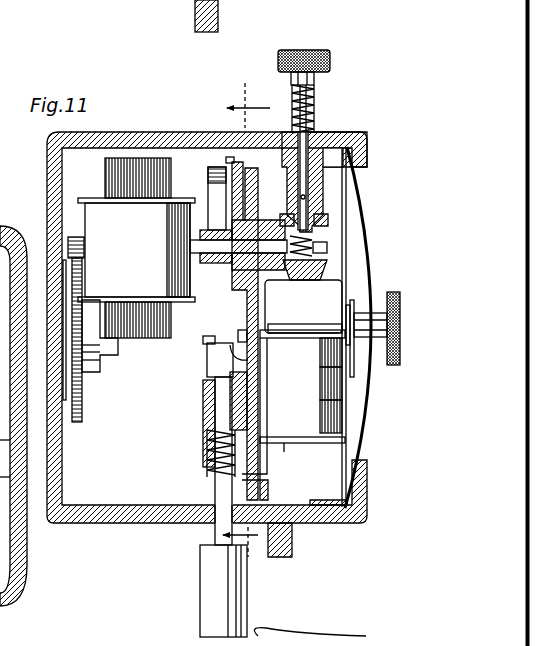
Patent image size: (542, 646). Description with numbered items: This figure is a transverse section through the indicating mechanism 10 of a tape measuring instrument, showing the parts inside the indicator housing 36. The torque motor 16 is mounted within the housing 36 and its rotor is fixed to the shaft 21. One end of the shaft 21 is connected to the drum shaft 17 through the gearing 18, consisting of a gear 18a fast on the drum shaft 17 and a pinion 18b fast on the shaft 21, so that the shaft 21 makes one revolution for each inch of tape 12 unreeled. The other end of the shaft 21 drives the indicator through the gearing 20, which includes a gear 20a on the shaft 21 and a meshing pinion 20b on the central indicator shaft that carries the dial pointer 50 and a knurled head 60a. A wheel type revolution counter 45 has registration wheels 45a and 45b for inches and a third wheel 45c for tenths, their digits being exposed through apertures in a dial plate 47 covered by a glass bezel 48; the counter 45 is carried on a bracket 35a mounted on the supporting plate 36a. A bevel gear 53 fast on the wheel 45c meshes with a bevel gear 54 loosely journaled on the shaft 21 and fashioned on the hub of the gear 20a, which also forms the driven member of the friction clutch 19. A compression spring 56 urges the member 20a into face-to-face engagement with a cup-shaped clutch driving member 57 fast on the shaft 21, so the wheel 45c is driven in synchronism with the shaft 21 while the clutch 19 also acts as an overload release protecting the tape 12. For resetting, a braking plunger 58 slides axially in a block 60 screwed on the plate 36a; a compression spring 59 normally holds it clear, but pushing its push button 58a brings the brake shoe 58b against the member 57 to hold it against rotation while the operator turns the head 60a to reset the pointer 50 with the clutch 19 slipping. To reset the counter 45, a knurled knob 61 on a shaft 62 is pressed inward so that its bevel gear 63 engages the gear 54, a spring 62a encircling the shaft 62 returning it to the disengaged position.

The indicating mechanism 10 is at (374, 207).
The tape 12 is at (248, 332).
The torque motor 16 is at (103, 185).
The drum shaft 17 is at (110, 356).
The gearing 18 is at (62, 246).
The gear 18a is at (83, 400).
The pinion 18b is at (84, 244).
The clutch 19 is at (227, 166).
The gearing 20 is at (208, 342).
The gear 20a is at (246, 325).
The pinion 20b is at (250, 345).
The shaft 21 is at (190, 246).
The bracket 35a is at (284, 444).
The indicator housing 36 is at (128, 524).
The supporting plate 36a is at (270, 490).
The wheel type revolution counter 45 is at (300, 443).
The registration wheel 45a is at (326, 417).
The registration wheel 45b is at (326, 386).
The third wheel 45c is at (326, 353).
The dial plate 47 is at (345, 458).
The glass bezel 48 is at (362, 446).
The dial pointer 50 is at (356, 375).
The bevel gear 53 is at (326, 270).
The bevel gear 54 is at (290, 228).
The compression spring 56 is at (327, 247).
The clutch driving member 57 is at (216, 195).
The braking plunger 58 is at (207, 361).
The push button 58a is at (205, 583).
The brake shoe 58b is at (250, 362).
The compression spring 59 is at (207, 453).
The block 60 is at (203, 411).
The knurled head 60a is at (394, 366).
The knurled knob 61 is at (330, 62).
The shaft 62 is at (308, 134).
The spring 62a is at (314, 101).
The bevel gear 63 is at (288, 216).